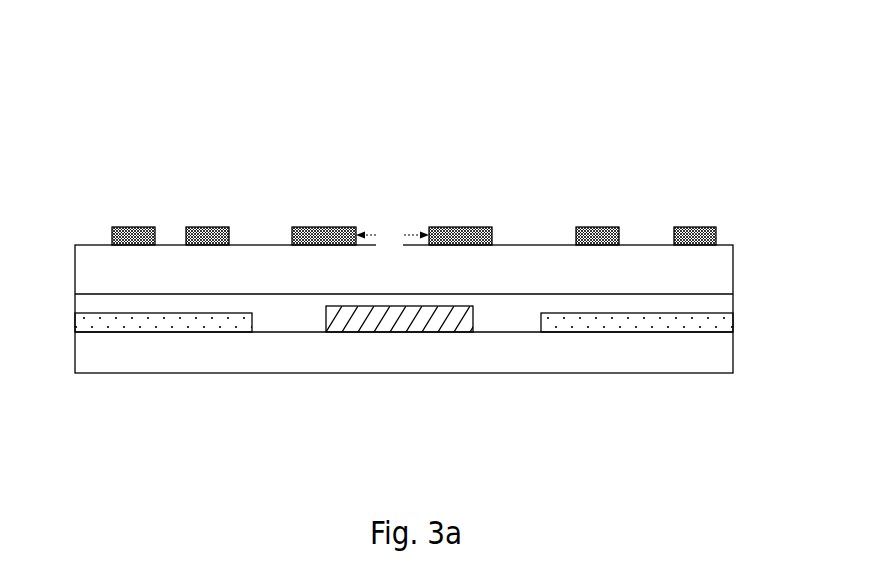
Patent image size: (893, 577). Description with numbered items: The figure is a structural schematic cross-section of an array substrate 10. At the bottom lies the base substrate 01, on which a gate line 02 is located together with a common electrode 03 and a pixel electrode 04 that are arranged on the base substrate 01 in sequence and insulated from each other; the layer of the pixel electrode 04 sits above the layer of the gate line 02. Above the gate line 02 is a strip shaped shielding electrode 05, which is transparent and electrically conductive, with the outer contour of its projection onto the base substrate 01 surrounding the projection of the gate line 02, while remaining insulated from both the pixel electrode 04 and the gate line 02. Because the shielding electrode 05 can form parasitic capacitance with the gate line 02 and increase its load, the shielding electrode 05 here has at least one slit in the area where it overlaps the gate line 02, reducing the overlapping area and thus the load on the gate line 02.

The array substrate 10 is at (372, 117).
The base substrate 01 is at (515, 358).
The gate line 02 is at (402, 327).
The common electrode 03 is at (170, 328).
The pixel electrode 04 is at (121, 227).
The shielding electrode 05 is at (440, 226).